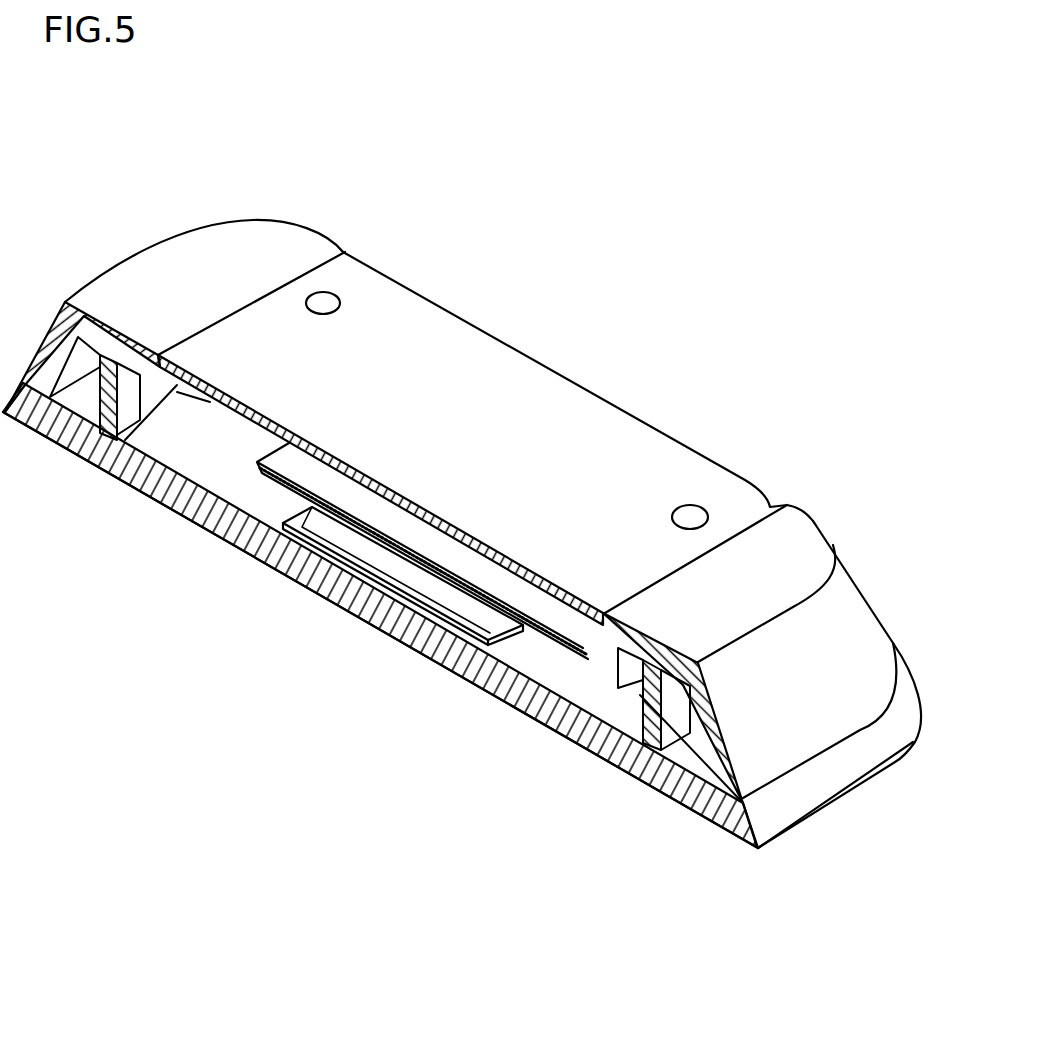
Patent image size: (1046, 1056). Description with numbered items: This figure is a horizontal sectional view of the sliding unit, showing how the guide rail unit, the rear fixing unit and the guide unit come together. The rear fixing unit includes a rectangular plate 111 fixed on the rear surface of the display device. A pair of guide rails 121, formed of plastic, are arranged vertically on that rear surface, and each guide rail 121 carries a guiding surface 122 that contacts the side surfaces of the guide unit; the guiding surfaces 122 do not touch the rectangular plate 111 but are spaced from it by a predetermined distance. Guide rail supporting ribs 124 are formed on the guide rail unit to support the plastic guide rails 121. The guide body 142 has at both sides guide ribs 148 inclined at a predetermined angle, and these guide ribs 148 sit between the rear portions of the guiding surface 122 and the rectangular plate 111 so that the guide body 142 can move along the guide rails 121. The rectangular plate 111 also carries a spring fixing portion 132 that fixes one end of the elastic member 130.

The rectangular plate 111 is at (803, 797).
The guide rail 121 is at (163, 270).
The guiding surface 122 is at (582, 607).
The guide rail supporting rib 124 is at (670, 722).
The elastic member 130 is at (273, 483).
The spring fixing portion 132 is at (413, 575).
The guide body 142 is at (490, 370).
The guide rib 148 is at (568, 732).